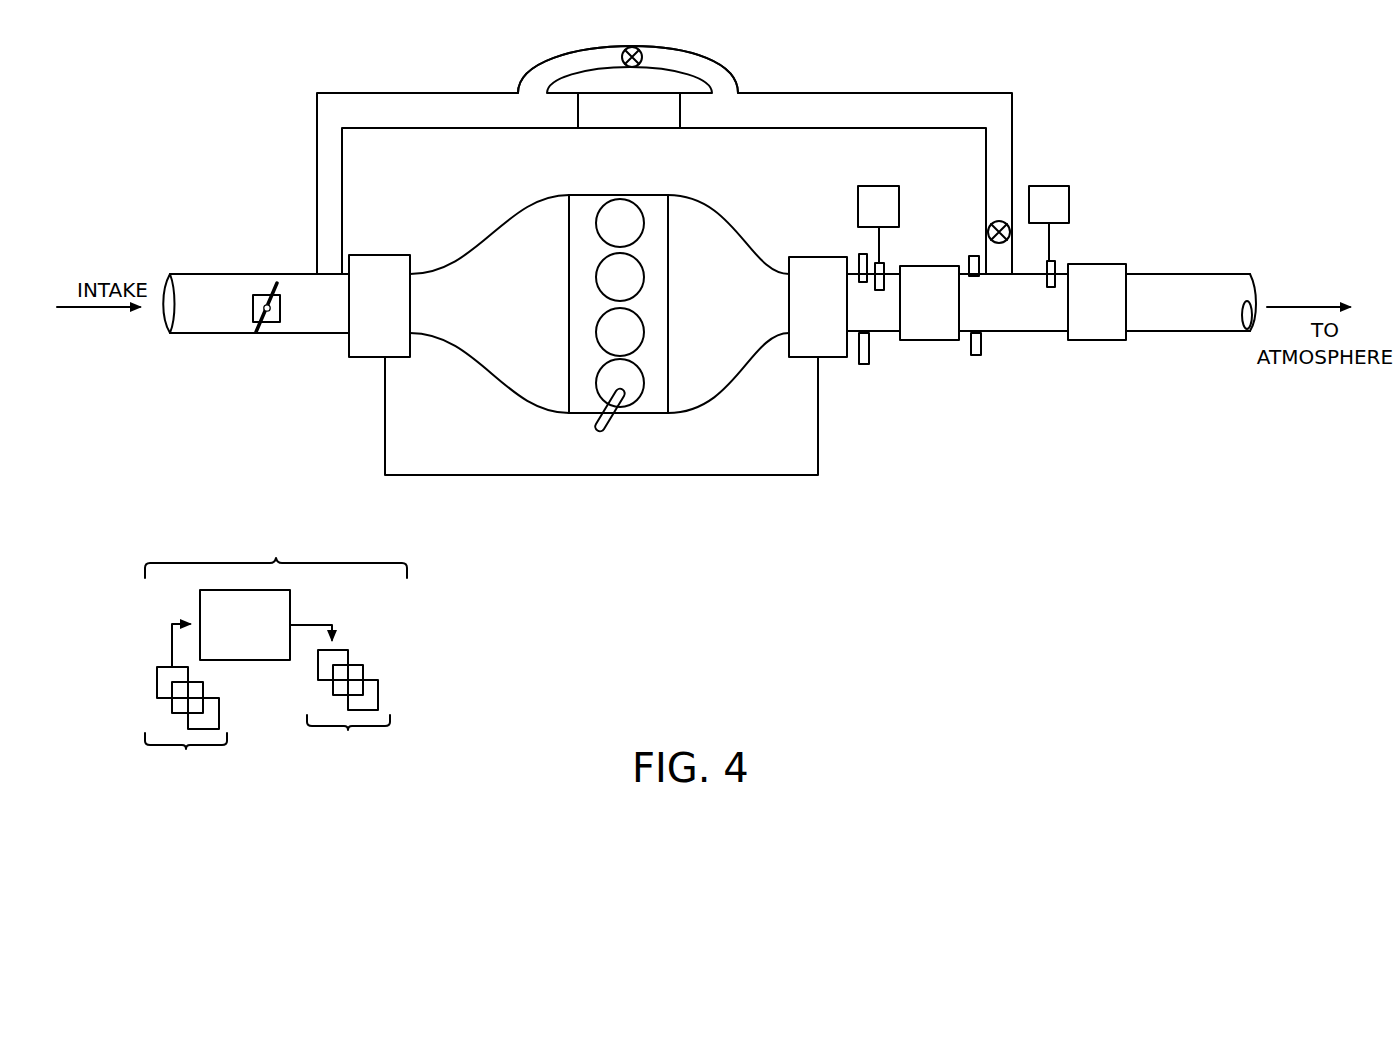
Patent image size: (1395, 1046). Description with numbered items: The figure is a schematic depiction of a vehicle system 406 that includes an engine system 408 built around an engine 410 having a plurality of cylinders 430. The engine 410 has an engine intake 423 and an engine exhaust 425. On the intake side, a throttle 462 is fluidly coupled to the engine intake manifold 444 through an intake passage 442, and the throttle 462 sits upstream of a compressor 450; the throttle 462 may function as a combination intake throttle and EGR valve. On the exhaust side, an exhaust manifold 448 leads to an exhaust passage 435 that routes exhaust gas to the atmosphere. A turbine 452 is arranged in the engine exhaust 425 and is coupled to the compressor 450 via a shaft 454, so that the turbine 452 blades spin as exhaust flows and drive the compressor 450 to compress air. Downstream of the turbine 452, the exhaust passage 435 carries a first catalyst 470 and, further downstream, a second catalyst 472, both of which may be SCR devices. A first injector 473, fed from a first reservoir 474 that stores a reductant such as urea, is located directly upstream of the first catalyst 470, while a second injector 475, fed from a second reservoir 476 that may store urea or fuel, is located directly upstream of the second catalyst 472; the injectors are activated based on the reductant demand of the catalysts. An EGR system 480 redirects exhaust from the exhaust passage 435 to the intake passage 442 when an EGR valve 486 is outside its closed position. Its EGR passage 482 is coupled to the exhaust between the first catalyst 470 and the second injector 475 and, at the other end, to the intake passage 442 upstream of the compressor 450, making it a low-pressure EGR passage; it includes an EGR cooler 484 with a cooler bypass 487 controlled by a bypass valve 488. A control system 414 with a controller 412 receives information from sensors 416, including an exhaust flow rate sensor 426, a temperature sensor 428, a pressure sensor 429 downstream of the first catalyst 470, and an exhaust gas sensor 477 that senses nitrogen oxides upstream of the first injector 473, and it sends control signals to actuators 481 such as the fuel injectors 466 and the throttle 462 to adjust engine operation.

The vehicle system 406 is at (128, 131).
The engine system 408 is at (699, 191).
The engine 410 is at (638, 304).
The controller 412 is at (245, 625).
The control system 414 is at (276, 651).
The sensors 416 is at (186, 707).
The engine intake 423 is at (440, 226).
The engine exhaust 425 is at (776, 249).
The exhaust flow rate sensor 426 is at (869, 349).
The temperature sensor 428 is at (971, 350).
The pressure sensor 429 is at (968, 266).
The cylinders 430 is at (643, 219).
The exhaust passage 435 is at (1181, 272).
The intake passage 442 is at (276, 336).
The engine intake manifold 444 is at (535, 314).
The exhaust manifold 448 is at (758, 314).
The compressor 450 is at (398, 314).
The turbine 452 is at (836, 314).
The shaft 454 is at (818, 440).
The throttle 462 is at (281, 318).
The fuel injectors 466 is at (612, 418).
The first catalyst 470 is at (947, 309).
The second catalyst 472 is at (1115, 309).
The first injector 473 is at (884, 267).
The first reservoir 474 is at (866, 186).
The second injector 475 is at (1056, 262).
The second reservoir 476 is at (1062, 186).
The exhaust gas sensor 477 is at (857, 256).
The EGR system 480 is at (288, 86).
The actuators 481 is at (342, 700).
The EGR passage 482 is at (859, 92).
The EGR cooler 484 is at (648, 119).
The EGR valve 486 is at (990, 225).
The cooler bypass 487 is at (718, 74).
The bypass valve 488 is at (633, 68).